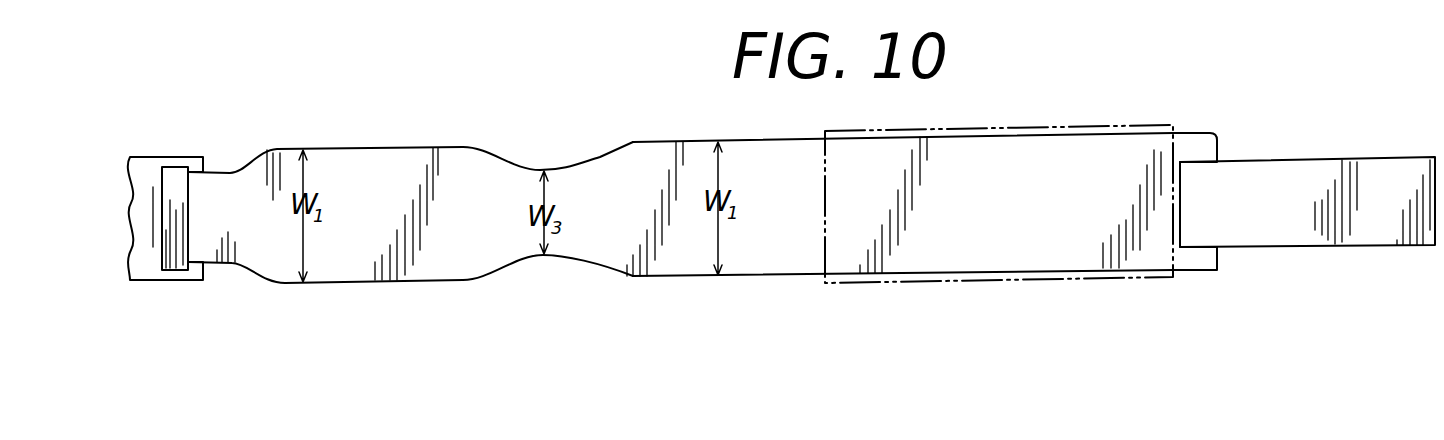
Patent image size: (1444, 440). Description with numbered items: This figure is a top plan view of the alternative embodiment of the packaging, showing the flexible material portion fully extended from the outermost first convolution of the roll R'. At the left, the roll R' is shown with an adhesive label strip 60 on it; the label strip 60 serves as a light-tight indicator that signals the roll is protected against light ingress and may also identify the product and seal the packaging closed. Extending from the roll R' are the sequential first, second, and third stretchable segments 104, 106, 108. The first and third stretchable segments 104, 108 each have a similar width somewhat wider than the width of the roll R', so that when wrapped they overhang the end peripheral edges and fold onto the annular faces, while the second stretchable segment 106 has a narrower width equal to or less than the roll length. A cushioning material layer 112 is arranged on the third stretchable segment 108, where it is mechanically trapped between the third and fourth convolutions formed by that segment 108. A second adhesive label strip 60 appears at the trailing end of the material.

The adhesive label strip 60 is at (170, 271).
The roll R' is at (186, 118).
The first stretchable segment 104 is at (328, 260).
The second stretchable segment 106 is at (523, 258).
The third stretchable segment 108 is at (758, 253).
The cushioning material layer 112 is at (1050, 283).